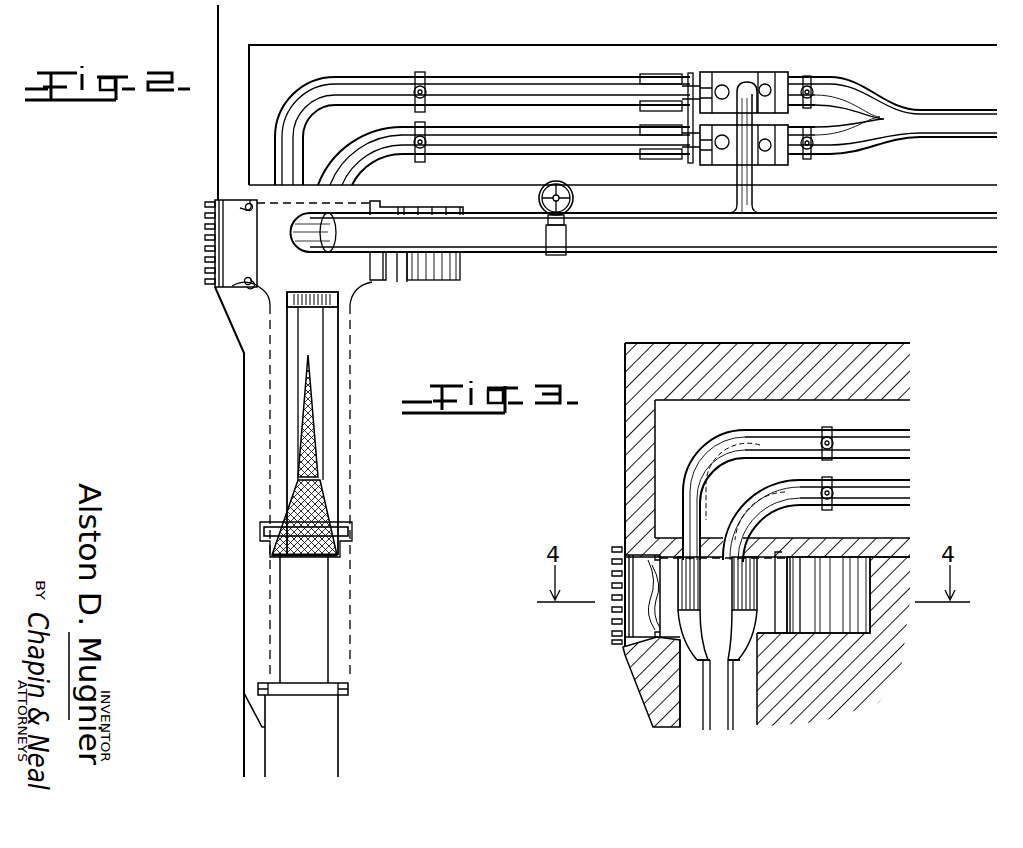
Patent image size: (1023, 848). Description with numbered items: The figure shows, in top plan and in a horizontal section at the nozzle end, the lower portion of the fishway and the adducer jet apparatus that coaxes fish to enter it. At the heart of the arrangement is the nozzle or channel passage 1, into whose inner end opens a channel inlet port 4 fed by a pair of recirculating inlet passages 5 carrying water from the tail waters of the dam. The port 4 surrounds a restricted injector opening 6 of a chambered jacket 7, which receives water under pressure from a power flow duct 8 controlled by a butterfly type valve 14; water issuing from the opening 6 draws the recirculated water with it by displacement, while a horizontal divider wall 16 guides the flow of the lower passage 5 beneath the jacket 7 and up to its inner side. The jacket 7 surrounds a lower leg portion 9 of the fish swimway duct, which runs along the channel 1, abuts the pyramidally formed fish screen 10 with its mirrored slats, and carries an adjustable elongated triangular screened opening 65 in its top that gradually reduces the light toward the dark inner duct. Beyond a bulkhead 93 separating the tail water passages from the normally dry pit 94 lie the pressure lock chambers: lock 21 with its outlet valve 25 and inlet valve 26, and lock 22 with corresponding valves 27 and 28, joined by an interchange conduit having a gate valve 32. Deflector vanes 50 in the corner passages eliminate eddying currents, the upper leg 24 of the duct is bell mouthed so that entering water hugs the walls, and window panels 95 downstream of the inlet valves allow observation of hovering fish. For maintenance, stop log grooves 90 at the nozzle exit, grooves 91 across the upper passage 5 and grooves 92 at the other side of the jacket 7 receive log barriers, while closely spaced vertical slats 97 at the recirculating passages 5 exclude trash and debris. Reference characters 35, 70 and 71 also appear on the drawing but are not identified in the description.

In FIG. 2, the nozzle channel passage 1 is at (347, 384).
In FIG. 3, the channel inlet port 4 is at (664, 685).
In FIG. 2, the recirculating inlet passages 5 is at (314, 256).
In FIG. 3, the recirculating inlet passages 5 is at (640, 566).
In FIG. 3, the injector opening 6 is at (735, 664).
In FIG. 2, the chambered jacket 7 is at (312, 292).
In FIG. 2, the power flow duct 8 is at (520, 240).
In FIG. 2, the lower leg portion 9 is at (320, 343).
In FIG. 2, the fish screen 10 is at (322, 500).
In FIG. 2, the valve 14 is at (560, 240).
In FIG. 2, the horizontal divider wall 16 is at (400, 280).
In FIG. 3, the horizontal divider wall 16 is at (795, 628).
In FIG. 3, the lock 21 is at (888, 433).
In FIG. 3, the lock 22 is at (896, 505).
In FIG. 2, the upper leg 24 is at (975, 110).
In FIG. 2, the outlet valve 25 is at (418, 78).
In FIG. 3, the outlet valve 25 is at (828, 430).
In FIG. 2, the inlet valve 26 is at (812, 84).
In FIG. 2, the outlet valve 27 is at (424, 160).
In FIG. 3, the outlet valve 27 is at (828, 510).
In FIG. 2, the inlet valve 28 is at (812, 156).
In FIG. 2, the gate valve 32 is at (725, 78).
In FIG. 2, the manifold end 35 is at (777, 80).
In FIG. 3, the deflector vanes 50 is at (706, 475).
In FIG. 2, the triangular screened opening 65 is at (310, 432).
In FIG. 2, the manifold block 70 is at (738, 84).
In FIG. 2, the riser pipe 71 is at (735, 196).
In FIG. 2, the stop log grooves 90 is at (345, 696).
In FIG. 2, the stop log grooves 91 is at (244, 206).
In FIG. 3, the stop log grooves 91 is at (665, 616).
In FIG. 2, the stop log grooves 92 is at (368, 204).
In FIG. 3, the stop log grooves 92 is at (782, 630).
In FIG. 2, the bulkhead 93 is at (360, 192).
In FIG. 3, the bulkhead 93 is at (678, 546).
In FIG. 2, the pit 94 is at (338, 45).
In FIG. 3, the pit 94 is at (658, 440).
In FIG. 2, the window panels 95 is at (657, 76).
In FIG. 2, the vertical slats 97 is at (205, 270).
In FIG. 3, the vertical slats 97 is at (612, 640).